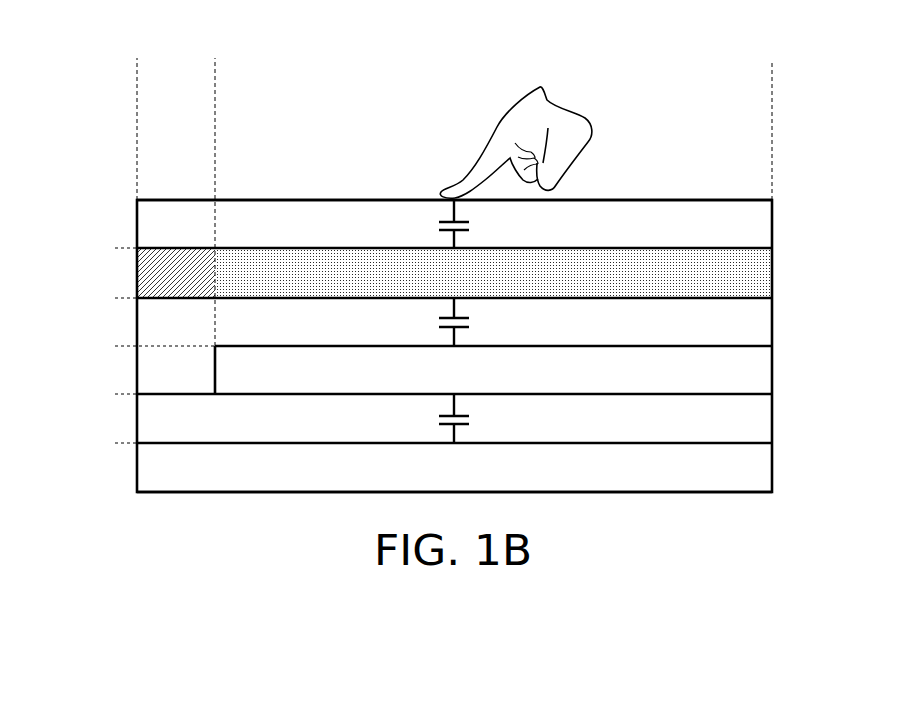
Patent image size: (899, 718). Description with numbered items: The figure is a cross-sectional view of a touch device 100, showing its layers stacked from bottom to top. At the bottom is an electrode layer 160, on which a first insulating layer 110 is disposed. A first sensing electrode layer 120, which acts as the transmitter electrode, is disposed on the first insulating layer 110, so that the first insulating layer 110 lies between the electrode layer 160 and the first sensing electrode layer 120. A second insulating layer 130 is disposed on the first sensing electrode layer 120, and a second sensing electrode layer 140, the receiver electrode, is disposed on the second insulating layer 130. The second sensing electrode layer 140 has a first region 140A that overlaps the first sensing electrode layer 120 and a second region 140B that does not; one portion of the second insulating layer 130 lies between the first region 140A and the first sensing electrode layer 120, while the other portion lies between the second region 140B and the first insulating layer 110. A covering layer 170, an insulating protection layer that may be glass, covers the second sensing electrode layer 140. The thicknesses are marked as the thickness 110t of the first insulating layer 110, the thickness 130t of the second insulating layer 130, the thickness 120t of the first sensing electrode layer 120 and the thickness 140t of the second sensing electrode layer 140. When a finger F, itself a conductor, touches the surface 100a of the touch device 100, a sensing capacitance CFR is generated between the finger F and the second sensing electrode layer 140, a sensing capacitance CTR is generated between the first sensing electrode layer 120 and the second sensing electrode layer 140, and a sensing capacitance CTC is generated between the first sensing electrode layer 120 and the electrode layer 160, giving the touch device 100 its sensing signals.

The touch device 100 is at (77, 28).
The surface 100a is at (347, 191).
The covering layer 170 is at (760, 226).
The second sensing electrode layer 140 is at (760, 274).
The second insulating layer 130 is at (760, 324).
The first sensing electrode layer 120 is at (760, 374).
The first insulating layer 110 is at (760, 421).
The electrode layer 160 is at (760, 469).
The first region 140A is at (215, 63).
The second region 140B is at (137, 63).
The thickness of the second sensing electrode layer 140t is at (122, 249).
The thickness of the second insulating layer 130t is at (122, 299).
The thickness of the first sensing electrode layer 120t is at (122, 347).
The thickness of the first insulating layer 110t is at (122, 395).
The finger F is at (573, 142).
The sensing capacitance CFR is at (476, 224).
The sensing capacitance CTR is at (476, 322).
The sensing capacitance CTC is at (476, 418).